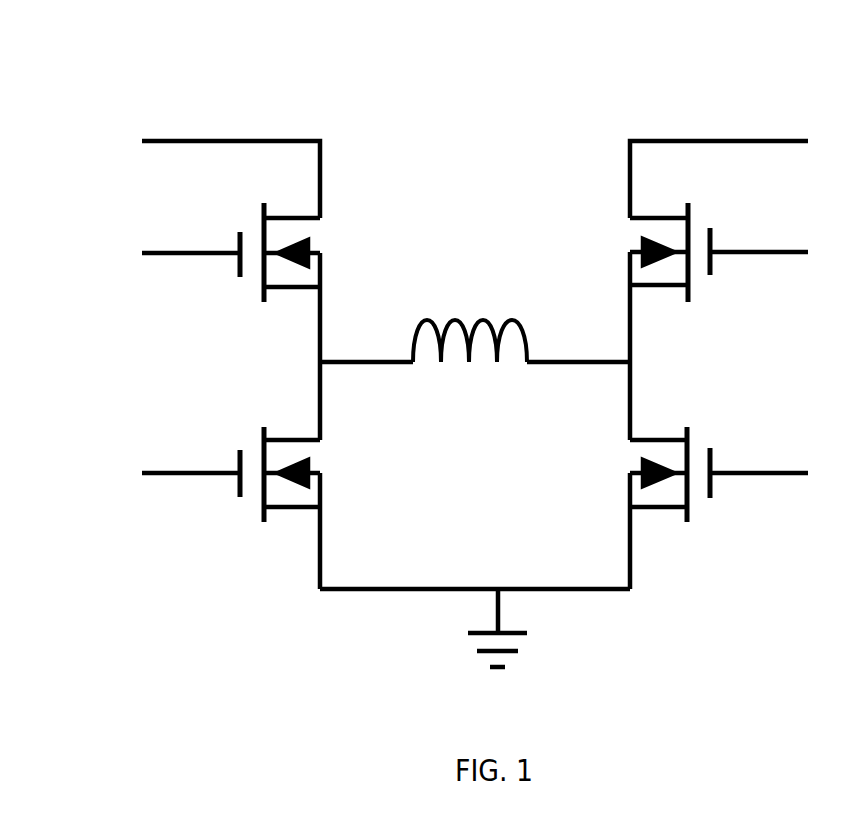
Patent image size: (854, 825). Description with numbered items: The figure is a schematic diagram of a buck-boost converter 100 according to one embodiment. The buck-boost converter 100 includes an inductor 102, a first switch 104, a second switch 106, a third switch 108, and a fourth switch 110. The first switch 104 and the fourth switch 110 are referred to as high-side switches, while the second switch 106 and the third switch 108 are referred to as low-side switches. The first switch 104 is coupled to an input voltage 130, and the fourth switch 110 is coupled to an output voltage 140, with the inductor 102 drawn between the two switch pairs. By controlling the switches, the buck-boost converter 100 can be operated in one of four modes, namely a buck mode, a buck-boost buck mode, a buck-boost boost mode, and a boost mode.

The buck-boost converter 100 is at (88, 62).
The inductor 102 is at (413, 322).
The first switch 104 is at (240, 232).
The second switch 106 is at (240, 450).
The third switch 108 is at (710, 448).
The fourth switch 110 is at (710, 228).
The input voltage 130 is at (286, 141).
The output voltage 140 is at (630, 141).